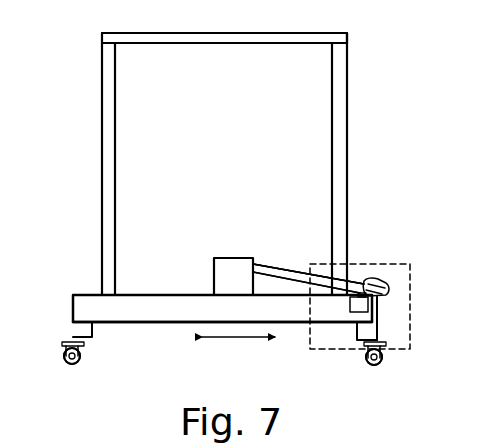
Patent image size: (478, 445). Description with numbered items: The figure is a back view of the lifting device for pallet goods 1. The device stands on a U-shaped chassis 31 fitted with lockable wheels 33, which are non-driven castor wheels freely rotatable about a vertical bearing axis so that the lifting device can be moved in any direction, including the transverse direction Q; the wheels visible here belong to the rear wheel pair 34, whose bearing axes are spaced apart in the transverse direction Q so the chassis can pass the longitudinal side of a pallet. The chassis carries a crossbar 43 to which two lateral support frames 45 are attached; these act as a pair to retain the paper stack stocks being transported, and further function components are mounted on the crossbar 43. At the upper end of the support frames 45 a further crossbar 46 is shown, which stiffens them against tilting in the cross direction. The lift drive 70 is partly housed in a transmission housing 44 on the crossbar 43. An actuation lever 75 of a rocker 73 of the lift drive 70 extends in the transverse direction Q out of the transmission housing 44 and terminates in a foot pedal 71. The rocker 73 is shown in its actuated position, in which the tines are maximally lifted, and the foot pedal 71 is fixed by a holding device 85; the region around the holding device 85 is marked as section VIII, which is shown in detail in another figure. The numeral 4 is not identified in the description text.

The lifting device for pallet goods 1 is at (96, 104).
The chassis 31 is at (73, 292).
The lockable wheels 33 is at (84, 364).
The rear wheel pair 34 is at (65, 362).
The crossbar 43 is at (143, 312).
The transmission housing 44 is at (218, 288).
The lateral support frames 45 is at (111, 143).
The crossbar 46 is at (227, 43).
The lift drive 70 is at (214, 232).
The foot pedal 71 is at (381, 278).
The rocker 73 is at (270, 266).
The actuation lever 75 is at (297, 268).
The holding device 85 is at (388, 304).
The element 4 (partial) 4 is at (473, 327).
The transverse direction Q is at (235, 338).
The section VIII is at (390, 263).